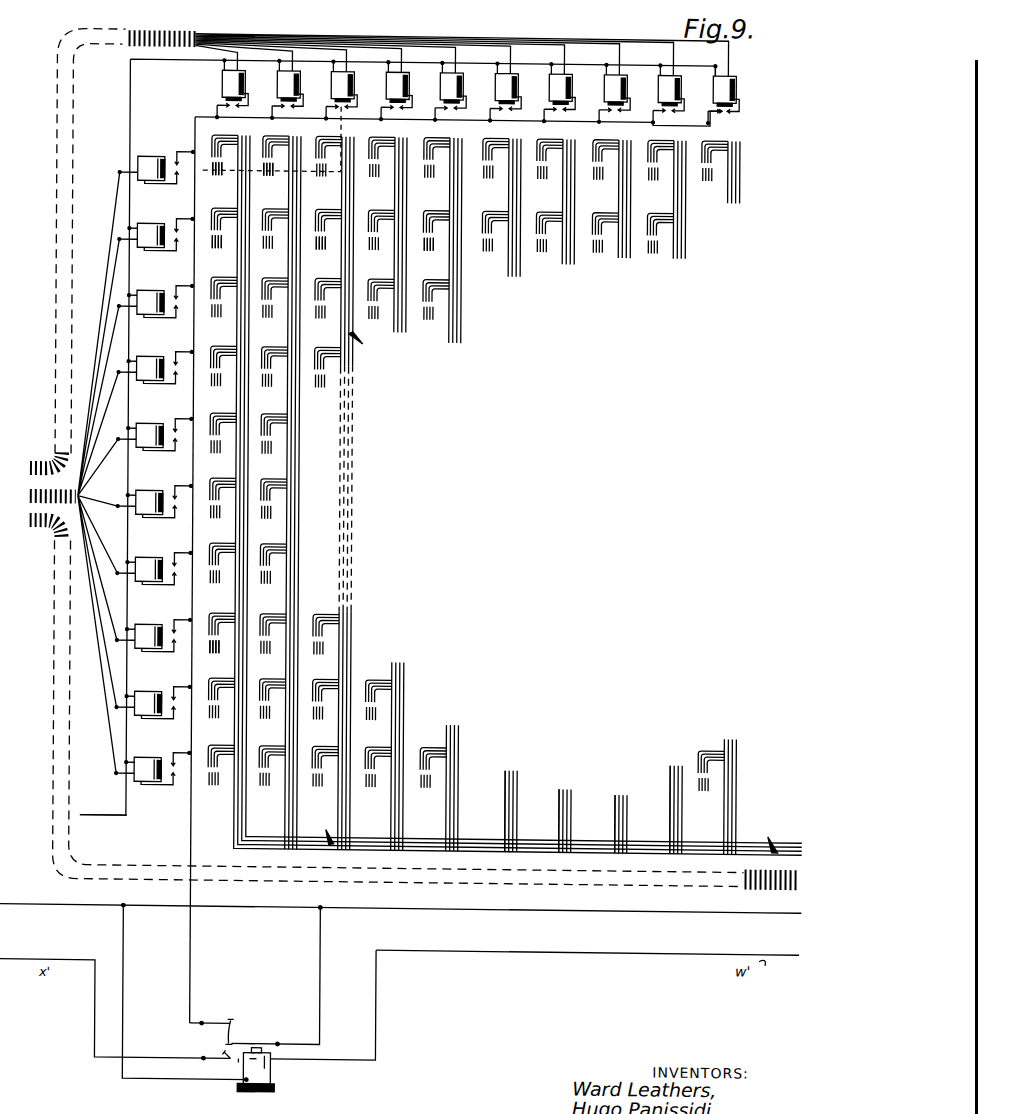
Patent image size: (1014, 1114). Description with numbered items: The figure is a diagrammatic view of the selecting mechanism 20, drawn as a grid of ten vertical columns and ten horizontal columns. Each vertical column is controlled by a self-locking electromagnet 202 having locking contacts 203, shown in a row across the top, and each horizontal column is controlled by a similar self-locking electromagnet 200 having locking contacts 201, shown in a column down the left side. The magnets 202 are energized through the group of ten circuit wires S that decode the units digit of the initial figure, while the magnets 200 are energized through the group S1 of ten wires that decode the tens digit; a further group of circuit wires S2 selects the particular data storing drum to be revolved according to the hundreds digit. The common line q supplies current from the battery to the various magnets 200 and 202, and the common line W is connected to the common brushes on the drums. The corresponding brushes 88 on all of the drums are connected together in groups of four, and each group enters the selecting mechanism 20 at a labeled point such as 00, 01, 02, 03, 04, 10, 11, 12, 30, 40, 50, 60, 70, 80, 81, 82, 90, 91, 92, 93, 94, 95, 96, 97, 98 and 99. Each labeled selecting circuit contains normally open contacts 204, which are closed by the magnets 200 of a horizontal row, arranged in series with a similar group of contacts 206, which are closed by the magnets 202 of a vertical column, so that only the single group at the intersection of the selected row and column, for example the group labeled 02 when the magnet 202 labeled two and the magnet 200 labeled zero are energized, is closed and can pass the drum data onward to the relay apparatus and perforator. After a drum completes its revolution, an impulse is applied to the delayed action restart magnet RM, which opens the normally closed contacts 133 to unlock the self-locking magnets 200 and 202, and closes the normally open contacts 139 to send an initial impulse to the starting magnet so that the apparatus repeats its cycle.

The selecting mechanism 20 is at (497, 486).
The brushes 88 is at (218, 180).
The normally closed pair of contacts 133 is at (236, 1028).
The normally open pair of contacts 139 is at (222, 1049).
The self-locking electromagnet 200 is at (158, 231).
The locking contacts 201 is at (181, 240).
The self-locking electromagnet 202 is at (279, 73).
The locking contacts 203 is at (458, 106).
The normally open pairs of contacts 204 is at (332, 178).
The group of contacts 206 is at (342, 134).
The delayed action restart magnet RM is at (272, 1072).
The group of ten circuit wires S is at (58, 438).
The group of ten circuit wires S1 is at (53, 507).
The group of circuit wires S2 is at (780, 897).
The common line W is at (78, 912).
The common line q is at (99, 817).
The selecting circuit group 00 is at (225, 162).
The selecting circuit group 01 is at (277, 164).
The selecting circuit group 02 is at (330, 164).
The selecting circuit group 03 is at (384, 166).
The selecting circuit group 04 is at (438, 167).
The selecting circuit group 10 is at (224, 234).
The selecting circuit group 11 is at (276, 235).
The selecting circuit group 12 is at (329, 235).
The selecting circuit group 30 is at (223, 372).
The selecting circuit group 40 is at (223, 439).
The selecting circuit group 50 is at (223, 504).
The selecting circuit group 60 is at (222, 569).
The selecting circuit group 70 is at (222, 639).
The selecting circuit group 80 is at (221, 704).
The selecting circuit group 81 is at (273, 705).
The selecting circuit group 82 is at (326, 705).
The selecting circuit group 90 is at (221, 772).
The selecting circuit group 91 is at (273, 773).
The selecting circuit group 92 is at (326, 773).
The selecting circuit group 93 is at (379, 774).
The selecting circuit group 94 is at (434, 775).
The selecting circuit group 95 is at (493, 810).
The selecting circuit group 96 is at (547, 820).
The selecting circuit group 97 is at (603, 822).
The selecting circuit group 98 is at (659, 809).
The selecting circuit group 99 is at (711, 778).